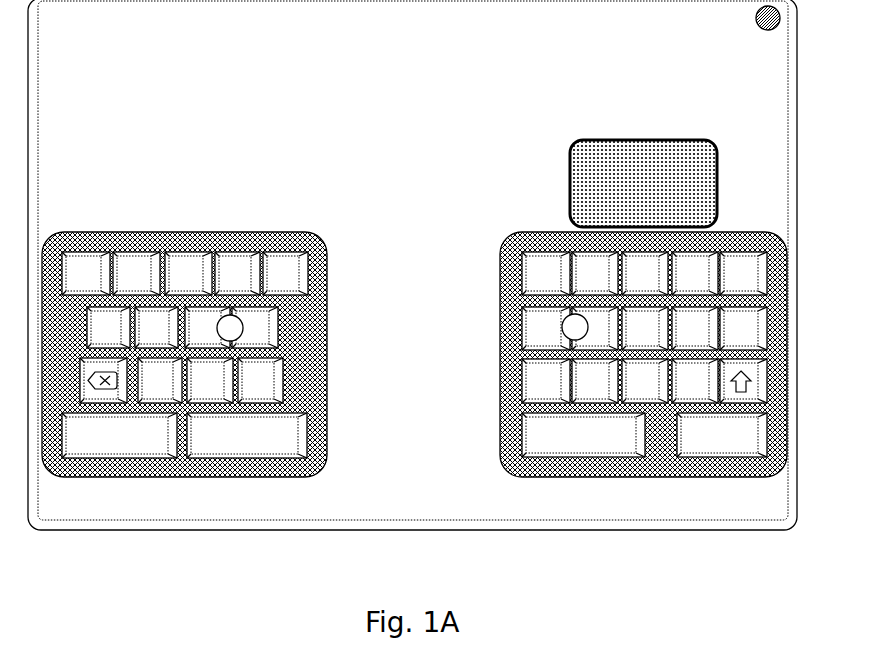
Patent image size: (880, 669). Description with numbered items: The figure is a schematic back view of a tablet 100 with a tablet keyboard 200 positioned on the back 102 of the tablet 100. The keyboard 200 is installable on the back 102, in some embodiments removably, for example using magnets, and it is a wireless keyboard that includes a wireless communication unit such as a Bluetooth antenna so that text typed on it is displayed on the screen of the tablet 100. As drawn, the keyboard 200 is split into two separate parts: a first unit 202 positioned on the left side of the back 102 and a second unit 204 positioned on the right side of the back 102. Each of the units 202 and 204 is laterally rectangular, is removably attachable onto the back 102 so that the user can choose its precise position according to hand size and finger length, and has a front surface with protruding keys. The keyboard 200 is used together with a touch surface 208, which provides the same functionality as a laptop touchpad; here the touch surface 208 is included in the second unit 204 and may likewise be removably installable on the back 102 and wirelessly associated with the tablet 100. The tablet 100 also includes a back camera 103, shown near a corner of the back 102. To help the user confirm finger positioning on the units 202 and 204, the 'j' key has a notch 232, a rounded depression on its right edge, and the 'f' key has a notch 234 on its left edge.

The tablet 100 is at (159, 580).
The back 102 is at (467, 498).
The back camera 103 is at (750, 22).
The tablet keyboard 200 is at (414, 313).
The first unit 202 is at (213, 216).
The second unit 204 is at (533, 213).
The touch surface 208 is at (659, 128).
The notch 232 is at (229, 331).
The notch 234 is at (572, 326).